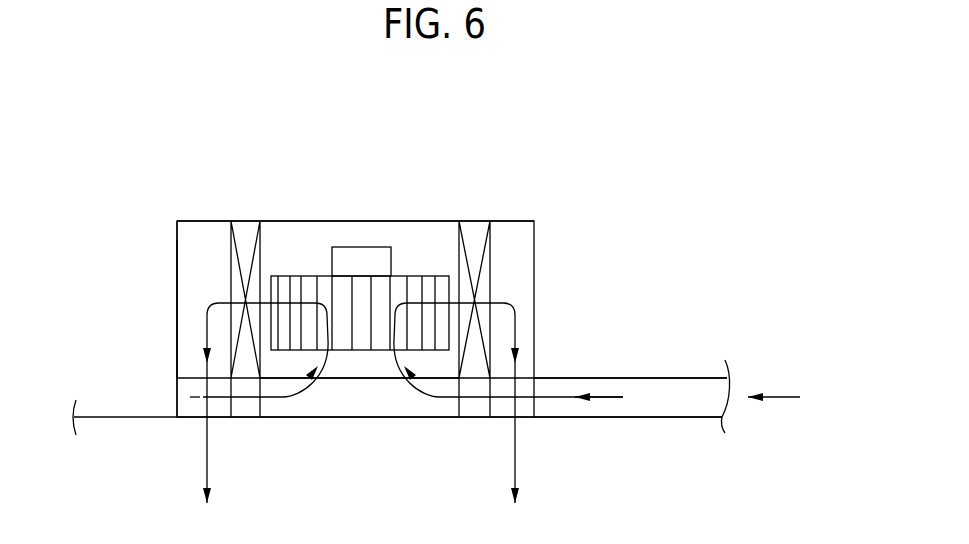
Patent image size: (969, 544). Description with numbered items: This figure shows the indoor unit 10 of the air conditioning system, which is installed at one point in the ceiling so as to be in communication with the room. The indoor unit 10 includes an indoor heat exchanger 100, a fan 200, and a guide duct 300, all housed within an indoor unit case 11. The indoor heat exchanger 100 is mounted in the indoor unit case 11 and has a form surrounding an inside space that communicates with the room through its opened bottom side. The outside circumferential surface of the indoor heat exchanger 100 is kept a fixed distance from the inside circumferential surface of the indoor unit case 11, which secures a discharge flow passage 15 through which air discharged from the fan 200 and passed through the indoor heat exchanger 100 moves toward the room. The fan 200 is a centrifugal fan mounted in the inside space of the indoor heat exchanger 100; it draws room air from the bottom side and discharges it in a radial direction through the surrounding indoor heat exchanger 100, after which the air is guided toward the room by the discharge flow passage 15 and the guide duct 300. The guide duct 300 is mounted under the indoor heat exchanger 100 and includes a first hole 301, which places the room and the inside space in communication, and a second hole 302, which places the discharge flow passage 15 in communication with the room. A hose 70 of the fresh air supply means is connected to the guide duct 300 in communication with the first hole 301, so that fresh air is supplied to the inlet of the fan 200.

The indoor unit 10 is at (375, 215).
The indoor unit case 11 is at (178, 257).
The discharge flow passage 15 is at (190, 298).
The hose 70 is at (662, 387).
The indoor heat exchanger 100 is at (487, 270).
The fan 200 is at (362, 337).
The guide duct 300 is at (254, 428).
The first hole 301 is at (305, 405).
The second hole 302 is at (188, 408).